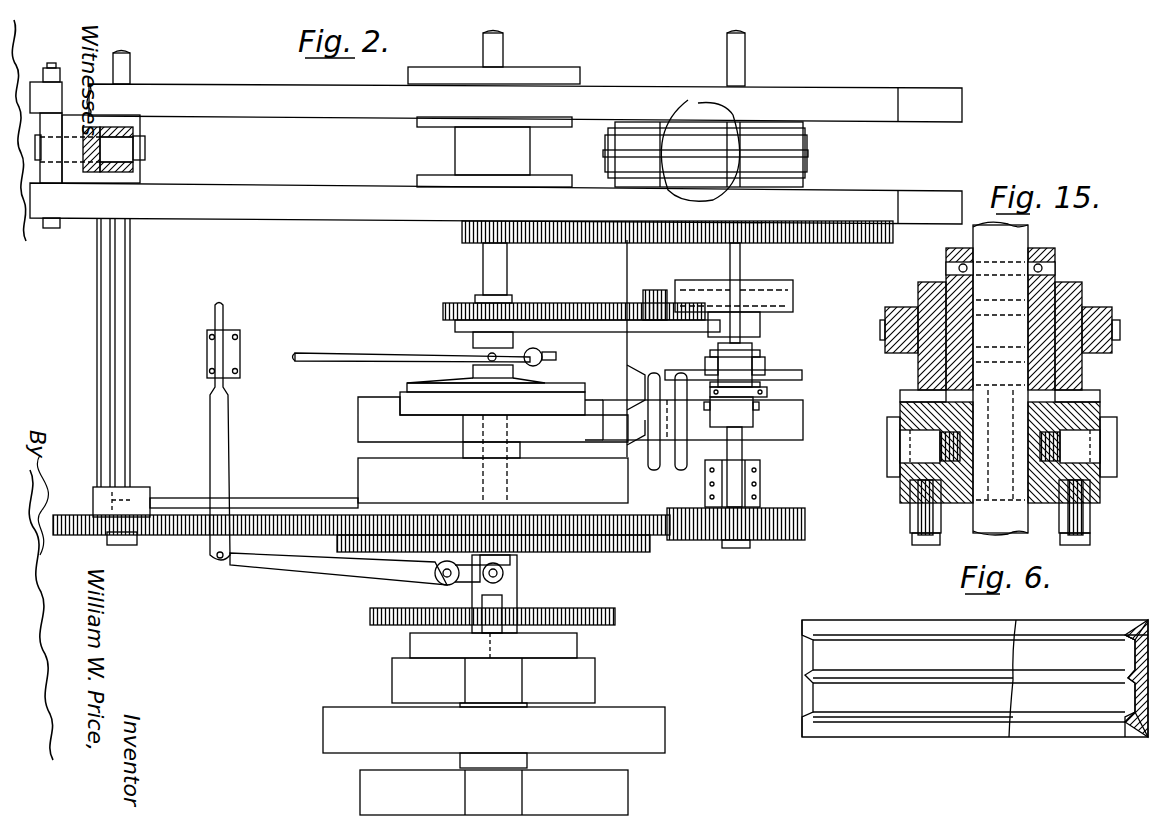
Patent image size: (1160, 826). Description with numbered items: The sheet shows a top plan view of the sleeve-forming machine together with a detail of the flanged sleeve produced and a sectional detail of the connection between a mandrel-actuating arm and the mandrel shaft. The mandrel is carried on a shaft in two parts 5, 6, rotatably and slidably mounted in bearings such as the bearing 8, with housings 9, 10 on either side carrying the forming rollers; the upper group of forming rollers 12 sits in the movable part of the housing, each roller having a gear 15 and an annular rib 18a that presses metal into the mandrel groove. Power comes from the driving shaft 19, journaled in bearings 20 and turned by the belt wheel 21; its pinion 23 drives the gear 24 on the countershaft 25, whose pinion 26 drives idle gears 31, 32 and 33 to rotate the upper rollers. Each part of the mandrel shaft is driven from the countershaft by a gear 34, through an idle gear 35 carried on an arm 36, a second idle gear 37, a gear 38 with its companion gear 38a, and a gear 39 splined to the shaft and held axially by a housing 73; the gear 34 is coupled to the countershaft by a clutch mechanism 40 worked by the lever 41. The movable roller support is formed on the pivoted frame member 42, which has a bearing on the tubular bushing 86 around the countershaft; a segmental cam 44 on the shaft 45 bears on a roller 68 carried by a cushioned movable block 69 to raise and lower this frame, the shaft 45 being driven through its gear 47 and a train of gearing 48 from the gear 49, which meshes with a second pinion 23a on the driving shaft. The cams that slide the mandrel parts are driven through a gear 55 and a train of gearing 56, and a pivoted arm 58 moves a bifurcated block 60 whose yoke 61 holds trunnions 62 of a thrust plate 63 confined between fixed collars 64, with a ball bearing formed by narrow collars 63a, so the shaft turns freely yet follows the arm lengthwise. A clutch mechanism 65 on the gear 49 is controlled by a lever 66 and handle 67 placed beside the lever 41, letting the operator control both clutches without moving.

In FIG. 2, the mandrel shaft part 5 is at (746, 50).
In FIG. 2, the mandrel shaft part 6 is at (741, 270).
In FIG. 15, the mandrel shaft part 6 is at (1010, 240).
In FIG. 2, the bearing 8 is at (760, 332).
In FIG. 2, the housing 9 is at (848, 97).
In FIG. 2, the housing 10 is at (870, 197).
In FIG. 2, the forming roller 12 is at (705, 147).
In FIG. 2, the gear 15 is at (696, 244).
In FIG. 2, the annular rib 18a is at (640, 152).
In FIG. 2, the driving shaft 19 is at (455, 656).
In FIG. 2, the bearing 20 is at (530, 483).
In FIG. 2, the belt wheel 21 is at (576, 650).
In FIG. 2, the pinion 23 is at (470, 535).
In FIG. 2, the pinion 23a is at (512, 605).
In FIG. 2, the gear 24 is at (508, 562).
In FIG. 2, the countershaft 25 is at (485, 52).
In FIG. 2, the pinion 26 is at (470, 244).
In FIG. 2, the idle gear 31 is at (538, 244).
In FIG. 2, the idle gear 32 is at (614, 244).
In FIG. 2, the idle gear 33 is at (760, 214).
In FIG. 2, the gear 34 is at (444, 311).
In FIG. 2, the idle gear 35 is at (565, 299).
In FIG. 2, the arm 36 is at (594, 332).
In FIG. 2, the idle gear 37 is at (603, 299).
In FIG. 2, the gear 38 is at (662, 320).
In FIG. 2, the gear 38a is at (655, 290).
In FIG. 2, the gear 39 is at (790, 296).
In FIG. 2, the clutch mechanism 40 is at (405, 393).
In FIG. 2, the operating lever 41 is at (312, 347).
In FIG. 2, the pivoted frame member 42 is at (258, 106).
In FIG. 2, the segmental cam 44 is at (146, 152).
In FIG. 2, the shaft 45 is at (124, 56).
In FIG. 2, the gear 47 is at (72, 507).
In FIG. 2, the train of gearing 48 is at (365, 515).
In FIG. 2, the gear 49 is at (598, 608).
In FIG. 2, the gear 55 is at (800, 540).
In FIG. 2, the train of gearing 56 is at (700, 540).
In FIG. 2, the pivoted arm 58 is at (768, 404).
In FIG. 15, the pivoted arm 58 is at (955, 503).
In FIG. 2, the bifurcated block 60 is at (758, 425).
In FIG. 15, the bifurcated block 60 is at (910, 523).
In FIG. 2, the yoke 61 is at (803, 378).
In FIG. 15, the yoke 61 is at (945, 290).
In FIG. 15, the trunnion 62 is at (930, 318).
In FIG. 2, the thrust plate 63 is at (766, 366).
In FIG. 15, the thrust plate 63 is at (903, 357).
In FIG. 2, the narrow collar 63a is at (720, 352).
In FIG. 15, the narrow collar 63a is at (1060, 285).
In FIG. 2, the collar 64 is at (762, 350).
In FIG. 15, the collar 64 is at (1065, 258).
In FIG. 2, the clutch mechanism 65 is at (506, 572).
In FIG. 2, the lever 66 is at (300, 570).
In FIG. 2, the handle 67 is at (228, 437).
In FIG. 2, the roller 68 is at (124, 172).
In FIG. 2, the movable block 69 is at (90, 172).
In FIG. 2, the housing 73 is at (792, 310).
In FIG. 2, the tubular bushing 86 is at (468, 148).